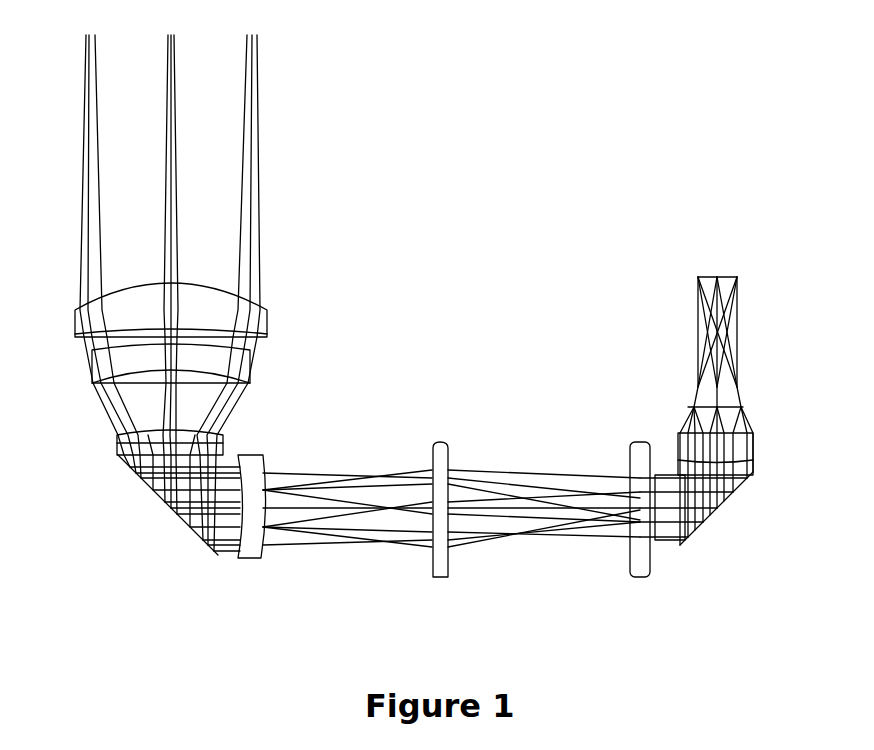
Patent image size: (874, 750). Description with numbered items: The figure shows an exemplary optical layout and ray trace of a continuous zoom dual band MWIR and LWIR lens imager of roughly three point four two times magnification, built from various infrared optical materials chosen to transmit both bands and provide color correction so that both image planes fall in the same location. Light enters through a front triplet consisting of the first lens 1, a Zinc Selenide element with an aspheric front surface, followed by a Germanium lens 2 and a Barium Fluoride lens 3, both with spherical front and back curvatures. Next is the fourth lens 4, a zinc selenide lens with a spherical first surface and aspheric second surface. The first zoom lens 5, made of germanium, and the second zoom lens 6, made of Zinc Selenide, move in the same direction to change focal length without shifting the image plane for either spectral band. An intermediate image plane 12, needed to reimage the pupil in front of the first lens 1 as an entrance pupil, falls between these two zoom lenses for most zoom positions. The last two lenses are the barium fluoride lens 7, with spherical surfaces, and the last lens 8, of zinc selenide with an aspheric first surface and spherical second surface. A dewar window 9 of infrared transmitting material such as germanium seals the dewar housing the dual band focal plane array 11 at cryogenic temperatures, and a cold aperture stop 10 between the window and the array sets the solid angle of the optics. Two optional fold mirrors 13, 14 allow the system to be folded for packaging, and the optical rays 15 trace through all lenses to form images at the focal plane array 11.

The first lens 1 is at (144, 314).
The Germanium lens 2 is at (153, 369).
The Barium Fluoride lens 3 is at (150, 442).
The fourth lens 4 is at (254, 535).
The first zoom lens 5 is at (440, 528).
The second zoom lens 6 is at (640, 533).
The barium fluoride lens 7 is at (671, 535).
The last lens 8 is at (736, 454).
The dewar window 9 is at (736, 413).
The aperture stop 10 is at (745, 342).
The focal plane array 11 is at (743, 275).
The intermediate image plane 12 is at (544, 539).
The fold mirror 13 is at (168, 505).
The fold mirror 14 is at (725, 511).
The optical rays 15 is at (150, 293).